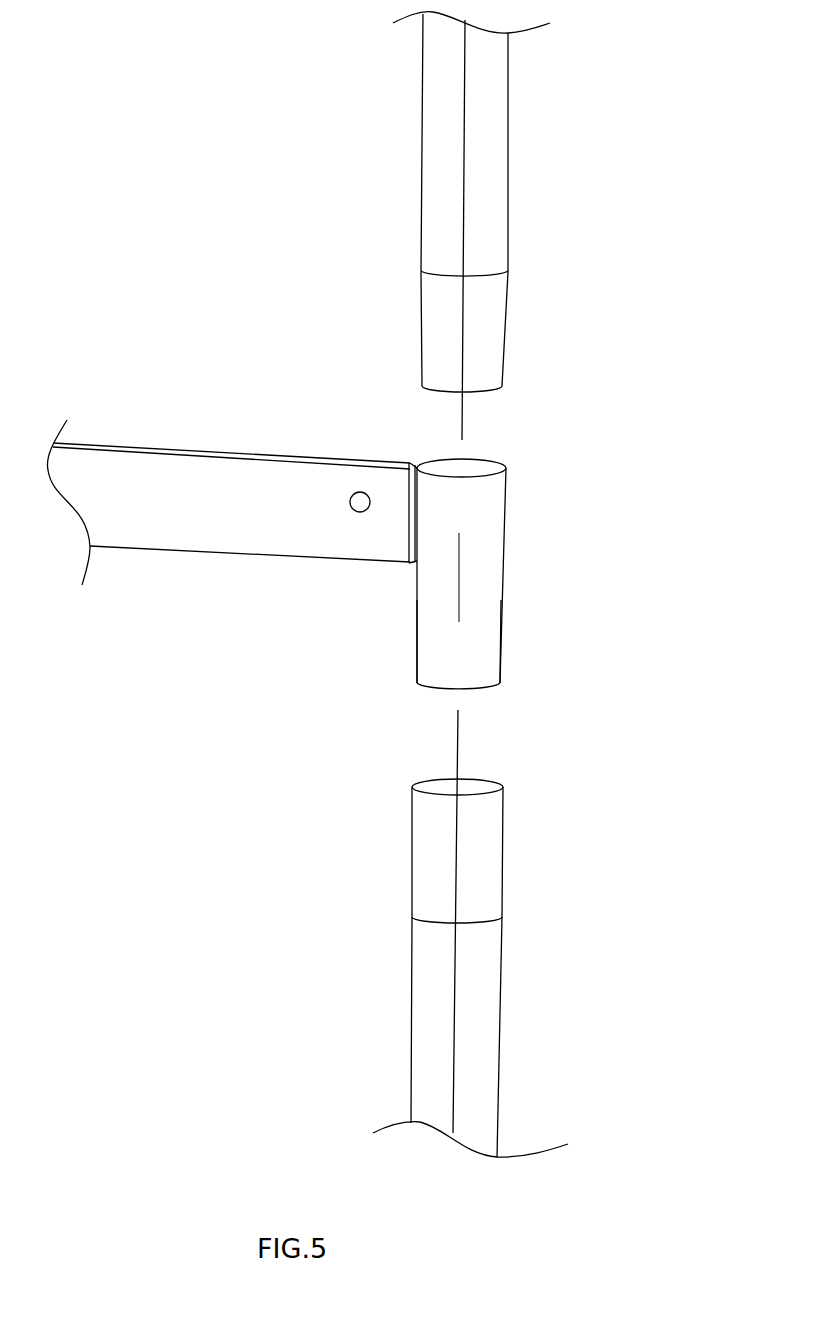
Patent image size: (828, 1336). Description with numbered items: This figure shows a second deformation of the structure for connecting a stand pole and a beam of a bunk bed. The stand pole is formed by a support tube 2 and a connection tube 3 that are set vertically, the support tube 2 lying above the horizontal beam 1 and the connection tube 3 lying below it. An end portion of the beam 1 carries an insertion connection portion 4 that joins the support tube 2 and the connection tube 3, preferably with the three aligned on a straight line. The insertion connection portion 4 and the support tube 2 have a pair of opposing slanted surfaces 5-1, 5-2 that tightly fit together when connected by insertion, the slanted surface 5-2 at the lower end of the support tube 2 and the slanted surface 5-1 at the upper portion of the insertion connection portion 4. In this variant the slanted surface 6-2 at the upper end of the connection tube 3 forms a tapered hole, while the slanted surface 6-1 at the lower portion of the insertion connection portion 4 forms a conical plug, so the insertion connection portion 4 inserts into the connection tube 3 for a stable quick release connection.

The beam 1 is at (240, 531).
The support tube 2 is at (500, 172).
The connection tube 3 is at (468, 995).
The insertion connection portion 4 is at (558, 567).
The slanted surface 5-1 is at (480, 470).
The slanted surface 5-2 is at (490, 330).
The slanted surface 6-1 is at (485, 648).
The slanted surface 6-2 is at (483, 783).